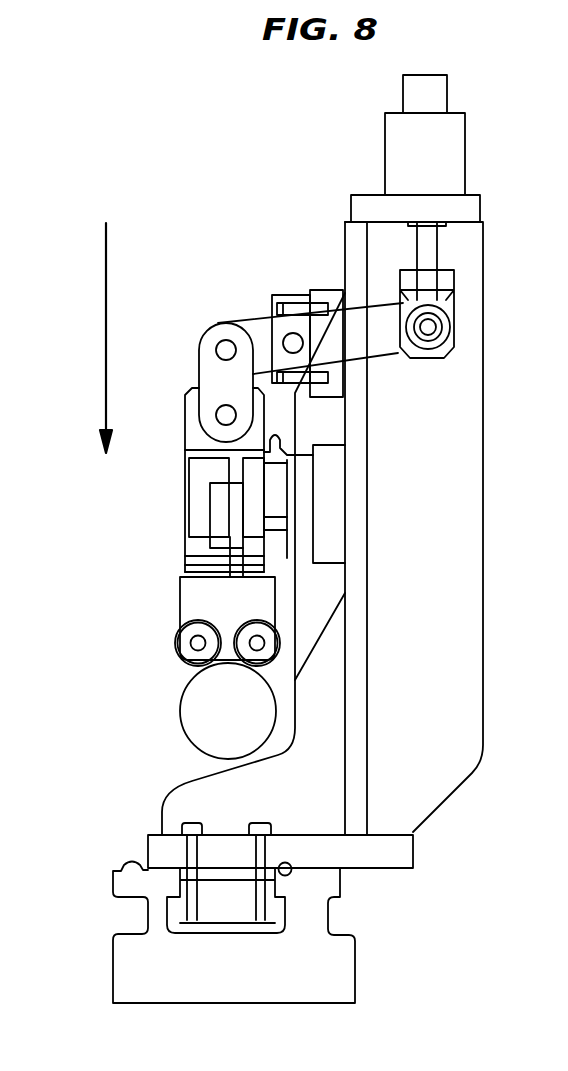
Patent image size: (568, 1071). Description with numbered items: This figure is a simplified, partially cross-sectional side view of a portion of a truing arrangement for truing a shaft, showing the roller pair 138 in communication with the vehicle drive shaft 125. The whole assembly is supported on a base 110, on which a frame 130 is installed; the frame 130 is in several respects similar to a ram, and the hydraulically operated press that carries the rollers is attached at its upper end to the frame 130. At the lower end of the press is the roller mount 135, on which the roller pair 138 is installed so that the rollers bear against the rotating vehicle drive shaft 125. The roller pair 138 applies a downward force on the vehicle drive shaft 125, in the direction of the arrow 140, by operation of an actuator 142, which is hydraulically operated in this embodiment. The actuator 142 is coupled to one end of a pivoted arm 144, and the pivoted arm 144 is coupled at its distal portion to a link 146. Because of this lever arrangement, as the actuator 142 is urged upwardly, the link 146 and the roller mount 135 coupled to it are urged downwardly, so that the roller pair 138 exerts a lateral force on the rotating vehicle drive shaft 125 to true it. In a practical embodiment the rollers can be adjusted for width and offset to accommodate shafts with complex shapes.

The base 110 is at (343, 967).
The vehicle drive shaft 125 is at (200, 727).
The frame 130 is at (450, 768).
The roller mount 135 is at (180, 593).
The roller pair 138 is at (172, 643).
The arrow 140 is at (103, 317).
The actuator 142 is at (437, 242).
The pivoted arm 144 is at (387, 347).
The link 146 is at (200, 378).